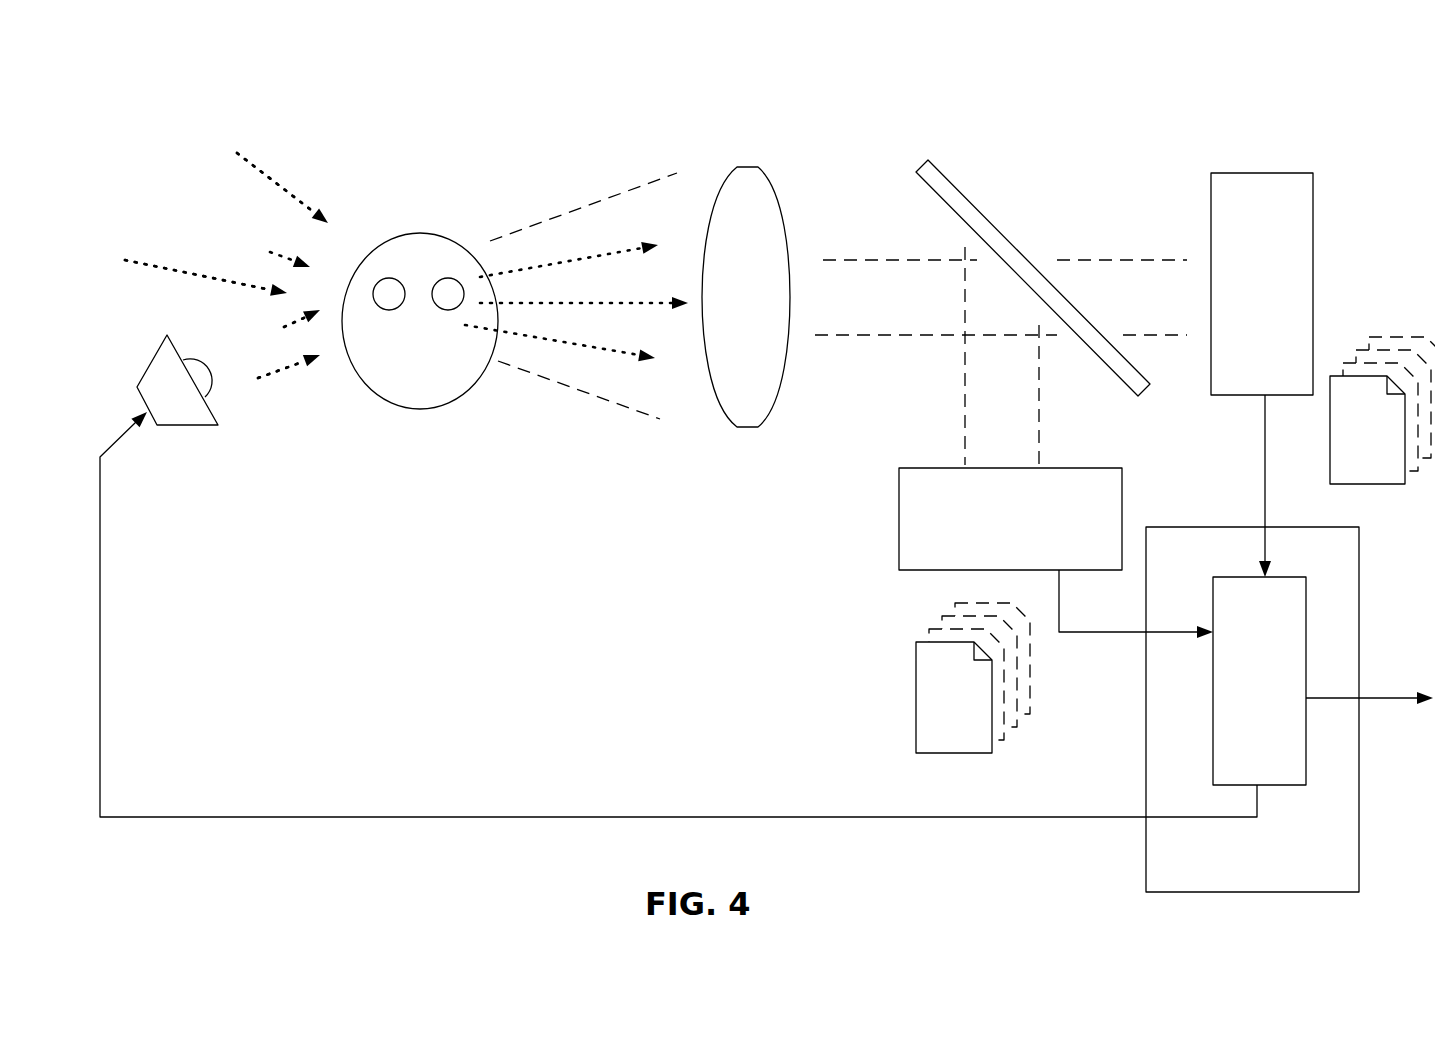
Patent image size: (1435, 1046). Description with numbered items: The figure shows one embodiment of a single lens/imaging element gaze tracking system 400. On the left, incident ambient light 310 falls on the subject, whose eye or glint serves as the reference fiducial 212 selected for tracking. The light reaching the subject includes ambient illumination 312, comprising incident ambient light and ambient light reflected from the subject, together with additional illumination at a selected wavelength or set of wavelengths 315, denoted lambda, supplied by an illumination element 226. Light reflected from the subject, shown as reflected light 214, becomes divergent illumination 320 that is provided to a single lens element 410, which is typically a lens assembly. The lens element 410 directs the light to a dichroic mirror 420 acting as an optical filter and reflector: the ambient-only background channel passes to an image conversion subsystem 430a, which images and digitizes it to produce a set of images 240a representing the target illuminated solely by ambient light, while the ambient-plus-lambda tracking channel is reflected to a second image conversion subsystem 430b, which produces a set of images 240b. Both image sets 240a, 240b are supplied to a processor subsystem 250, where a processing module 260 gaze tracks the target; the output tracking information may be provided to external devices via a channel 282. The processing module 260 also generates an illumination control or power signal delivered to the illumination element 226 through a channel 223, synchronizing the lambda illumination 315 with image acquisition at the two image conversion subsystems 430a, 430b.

The single lens/imaging element gaze tracking system 400 is at (630, 77).
The incident ambient light 310 is at (142, 197).
The ambient illumination 312 is at (220, 221).
The illumination at selected wavelength (lambda) 315 is at (261, 347).
The illumination element 226 is at (143, 364).
The reference fiducial 212 is at (428, 270).
The reflected light 214 is at (551, 167).
The divergent illumination 320 is at (576, 301).
The single lens element 410 is at (738, 166).
The dichroic mirror 420 is at (918, 158).
The image conversion subsystem 430a is at (1262, 375).
The second image conversion subsystem 430b is at (1056, 553).
The set of images 240a is at (1388, 310).
The set of images 240b is at (895, 708).
The processor subsystem 250 is at (1252, 709).
The processing module 260 is at (1259, 681).
The channel 282 is at (1388, 694).
The channel 223 is at (390, 817).